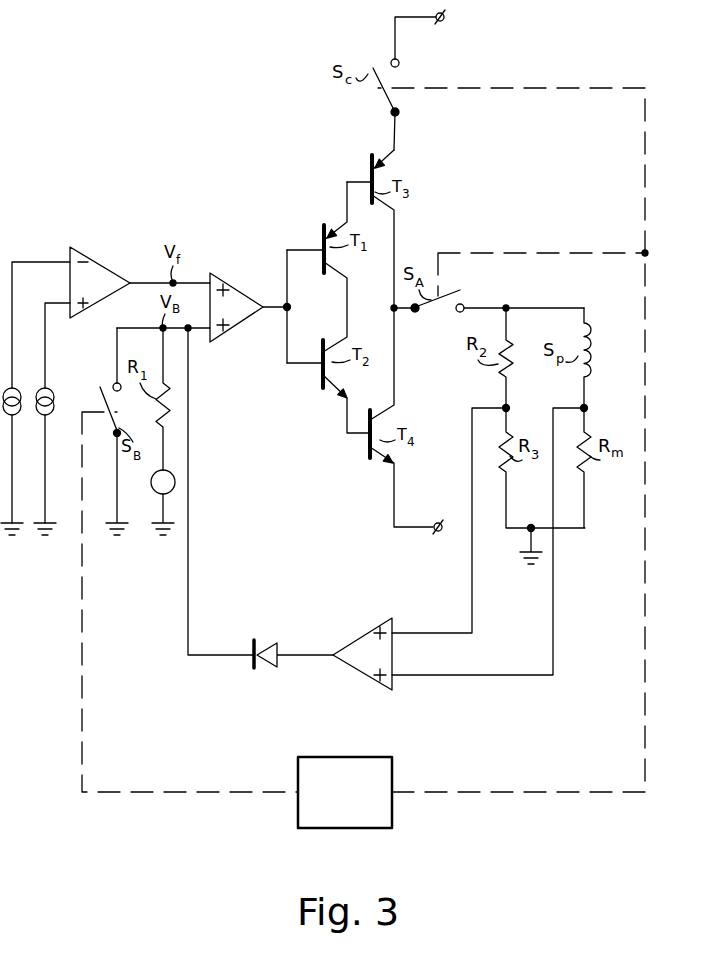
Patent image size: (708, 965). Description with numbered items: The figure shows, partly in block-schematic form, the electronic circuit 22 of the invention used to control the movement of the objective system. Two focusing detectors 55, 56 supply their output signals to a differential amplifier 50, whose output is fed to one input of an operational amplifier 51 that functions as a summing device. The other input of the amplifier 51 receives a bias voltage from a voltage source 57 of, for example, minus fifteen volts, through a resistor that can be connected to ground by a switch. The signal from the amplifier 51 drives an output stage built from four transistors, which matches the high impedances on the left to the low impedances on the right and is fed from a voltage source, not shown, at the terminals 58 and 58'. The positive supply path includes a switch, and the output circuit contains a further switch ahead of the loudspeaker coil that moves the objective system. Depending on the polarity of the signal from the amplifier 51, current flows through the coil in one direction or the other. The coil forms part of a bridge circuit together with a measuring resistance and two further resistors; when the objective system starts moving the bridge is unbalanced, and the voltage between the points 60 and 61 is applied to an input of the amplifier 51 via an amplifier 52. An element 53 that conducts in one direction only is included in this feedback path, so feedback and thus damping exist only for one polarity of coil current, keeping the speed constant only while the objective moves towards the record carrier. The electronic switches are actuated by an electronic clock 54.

The speed control circuit 22 is at (218, 216).
The differential amplifier 50 is at (112, 266).
The operational amplifier 51 is at (231, 277).
The amplifier 52 is at (354, 635).
The element which conducts in one direction only 53 is at (270, 640).
The electronic clock 54 is at (338, 757).
The focusing detector 55 is at (16, 388).
The focusing detector 56 is at (50, 388).
The voltage source 57 is at (152, 486).
The terminal 58 is at (459, 17).
The terminal 58' is at (414, 542).
The point 60 is at (504, 406).
The point 61 is at (582, 406).